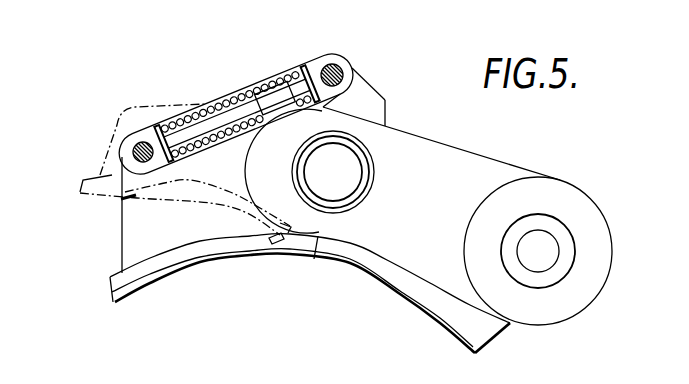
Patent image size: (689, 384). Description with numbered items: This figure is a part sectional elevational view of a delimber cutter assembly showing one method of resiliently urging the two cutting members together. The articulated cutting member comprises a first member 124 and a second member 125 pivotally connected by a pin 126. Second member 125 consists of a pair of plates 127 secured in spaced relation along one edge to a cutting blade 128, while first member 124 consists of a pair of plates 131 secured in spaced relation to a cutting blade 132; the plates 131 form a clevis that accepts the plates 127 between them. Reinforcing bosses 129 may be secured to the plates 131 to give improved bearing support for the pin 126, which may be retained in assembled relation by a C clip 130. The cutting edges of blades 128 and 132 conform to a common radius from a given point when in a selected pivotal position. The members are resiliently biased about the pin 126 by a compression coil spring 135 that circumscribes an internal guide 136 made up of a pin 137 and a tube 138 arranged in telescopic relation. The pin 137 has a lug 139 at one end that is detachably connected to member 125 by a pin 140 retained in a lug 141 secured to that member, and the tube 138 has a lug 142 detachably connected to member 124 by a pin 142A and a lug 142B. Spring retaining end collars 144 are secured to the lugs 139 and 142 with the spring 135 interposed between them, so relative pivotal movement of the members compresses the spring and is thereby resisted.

The first member 124 is at (455, 166).
The second member 125 is at (196, 232).
The pin 126 is at (340, 174).
The plates 127 is at (142, 238).
The cutting blade 128 is at (207, 248).
The reinforcing bosses 129 is at (358, 198).
The "C" clip 130 is at (358, 152).
The plates 131 is at (497, 173).
The cutting blade 132 is at (453, 313).
The compression coil spring 135 is at (205, 107).
The internal guide 136 is at (228, 108).
The pin 137 is at (233, 120).
The tube 138 is at (272, 80).
The lug 139 is at (152, 138).
The pin 140 is at (133, 153).
The lug 141 is at (302, 116).
The lug 142 is at (316, 64).
The pin 142A is at (352, 70).
The lug 142B is at (368, 107).
The spring retaining end collars 144 is at (163, 127).